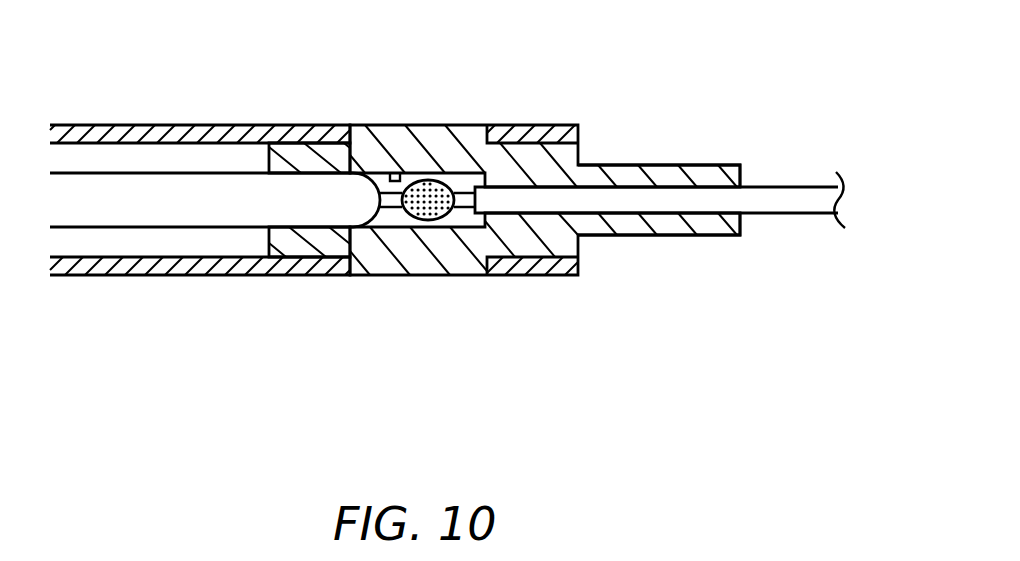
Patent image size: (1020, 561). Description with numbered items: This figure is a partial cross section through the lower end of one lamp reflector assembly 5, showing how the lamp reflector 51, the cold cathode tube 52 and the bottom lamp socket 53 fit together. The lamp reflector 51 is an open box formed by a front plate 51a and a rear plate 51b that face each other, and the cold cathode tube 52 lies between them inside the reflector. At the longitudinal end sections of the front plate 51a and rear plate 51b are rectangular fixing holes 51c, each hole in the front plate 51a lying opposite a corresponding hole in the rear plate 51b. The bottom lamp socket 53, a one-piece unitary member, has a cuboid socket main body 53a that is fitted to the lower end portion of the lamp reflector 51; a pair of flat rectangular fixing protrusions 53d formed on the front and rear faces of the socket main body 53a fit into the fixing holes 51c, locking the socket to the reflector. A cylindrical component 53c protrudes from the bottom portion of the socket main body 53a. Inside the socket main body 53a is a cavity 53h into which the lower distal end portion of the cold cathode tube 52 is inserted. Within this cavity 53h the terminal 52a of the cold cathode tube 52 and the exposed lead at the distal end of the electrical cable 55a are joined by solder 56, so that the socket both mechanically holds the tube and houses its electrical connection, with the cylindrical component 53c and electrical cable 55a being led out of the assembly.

The lamp reflector assembly 5 is at (100, 114).
The lamp reflector 51 is at (200, 99).
The front plate 51a is at (190, 125).
The rear plate 51b is at (185, 275).
The fixing holes 51c is at (360, 165).
The cold cathode tube 52 is at (152, 173).
The terminal 52a is at (381, 226).
The bottom lamp socket 53 is at (545, 161).
The socket main body 53a is at (533, 150).
The cylindrical component 53c is at (660, 165).
The fixing protrusions 53d is at (460, 125).
The cavity 53h is at (404, 172).
The electrical cable 55a is at (785, 187).
The solder 56 is at (440, 220).